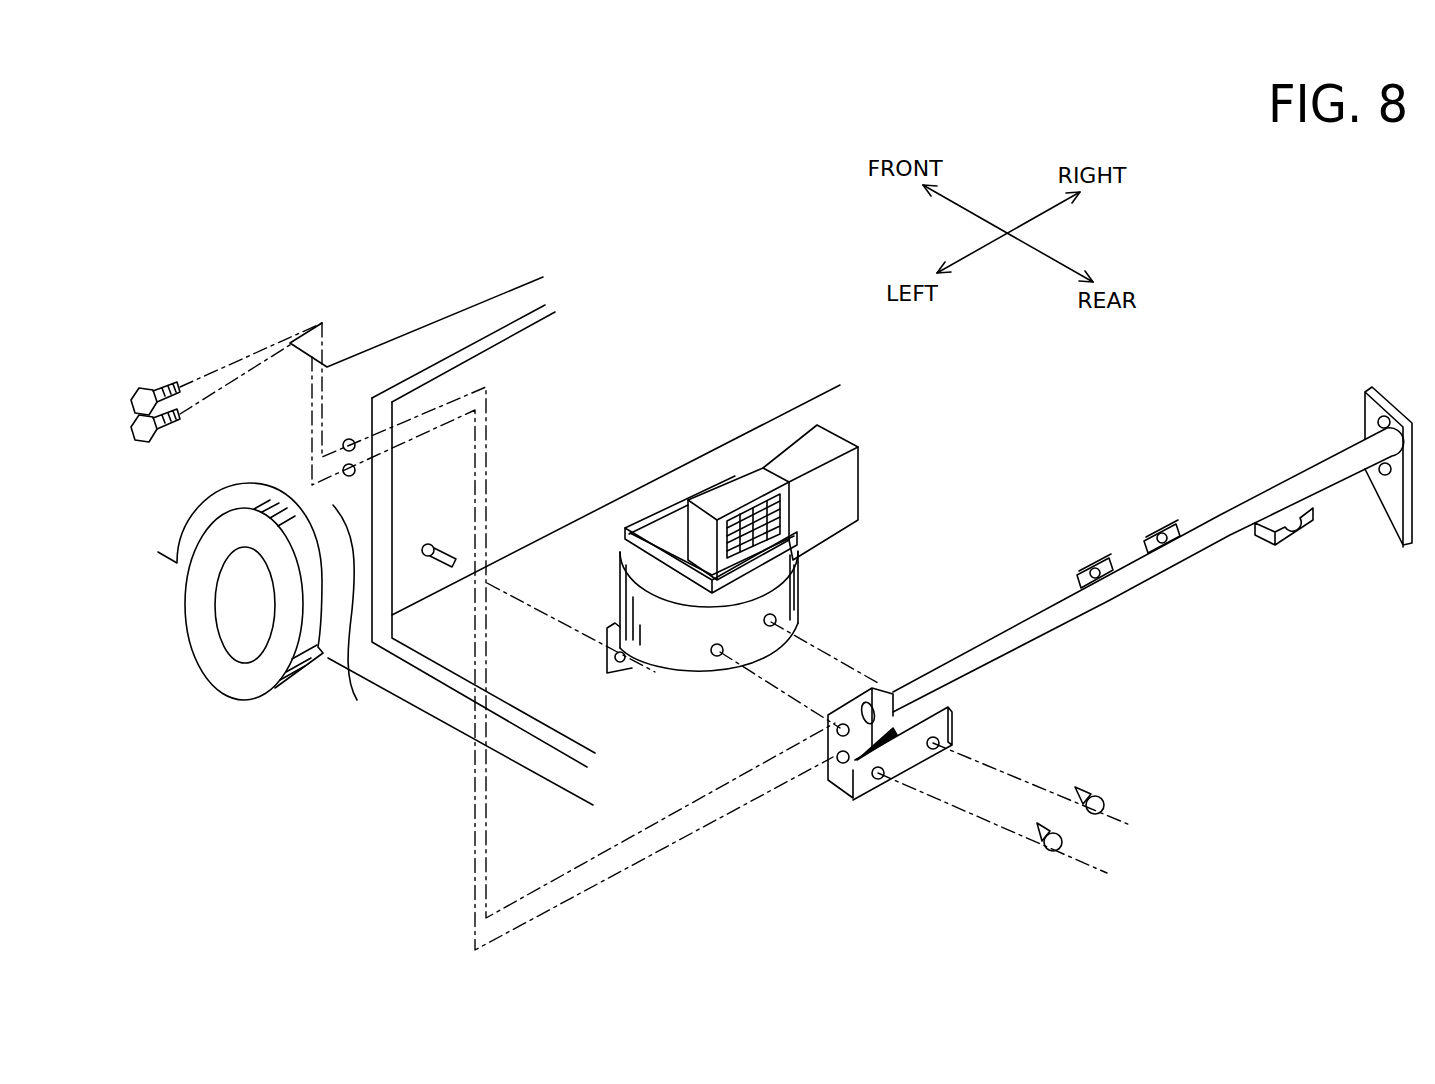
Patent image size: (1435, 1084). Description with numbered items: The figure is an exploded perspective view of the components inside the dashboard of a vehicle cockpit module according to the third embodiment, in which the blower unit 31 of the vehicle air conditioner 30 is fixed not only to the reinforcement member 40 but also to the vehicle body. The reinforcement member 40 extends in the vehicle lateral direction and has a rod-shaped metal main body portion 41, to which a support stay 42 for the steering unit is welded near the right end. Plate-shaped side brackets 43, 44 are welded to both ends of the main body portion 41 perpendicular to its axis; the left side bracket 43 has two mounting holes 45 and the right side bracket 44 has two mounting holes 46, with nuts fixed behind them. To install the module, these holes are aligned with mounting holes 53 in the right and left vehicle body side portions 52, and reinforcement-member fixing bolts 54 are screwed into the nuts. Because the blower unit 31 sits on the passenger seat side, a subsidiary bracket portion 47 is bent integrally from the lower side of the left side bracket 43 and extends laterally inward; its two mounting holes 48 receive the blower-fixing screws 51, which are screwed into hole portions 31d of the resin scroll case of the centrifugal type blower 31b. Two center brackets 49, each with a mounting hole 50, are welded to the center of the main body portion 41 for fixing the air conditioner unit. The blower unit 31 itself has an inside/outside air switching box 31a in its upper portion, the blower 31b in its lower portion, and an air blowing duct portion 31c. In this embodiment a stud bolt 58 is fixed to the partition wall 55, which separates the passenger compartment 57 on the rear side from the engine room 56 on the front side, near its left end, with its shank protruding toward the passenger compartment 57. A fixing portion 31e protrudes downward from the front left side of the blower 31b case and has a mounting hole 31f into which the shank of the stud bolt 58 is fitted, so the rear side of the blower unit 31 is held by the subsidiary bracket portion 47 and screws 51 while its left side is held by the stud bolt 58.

The vehicle air conditioner 30 is at (784, 429).
The blower unit 31 is at (688, 477).
The inside/outside air switching box 31a is at (665, 512).
The centrifugal type blower 31b is at (630, 608).
The air blowing duct portion 31c is at (838, 435).
The hole portions 31d is at (776, 616).
The fixing portion 31e is at (632, 665).
The mounting hole 31f is at (607, 656).
The reinforcement member 40 is at (1128, 590).
The main body portion 41 is at (1050, 632).
The support stay 42 is at (1280, 547).
The side bracket 43 is at (878, 685).
The side bracket 44 is at (1390, 395).
The mounting holes 45 is at (837, 728).
The mounting holes 46 is at (1377, 421).
The subsidiary bracket portion 47 is at (950, 713).
The mounting holes 48 is at (985, 742).
The center brackets 49 is at (1078, 580).
The mounting hole 50 is at (1103, 563).
The blower-fixing screws 51 is at (1108, 797).
The vehicle body side portions 52 is at (357, 700).
The mounting holes 53 is at (349, 438).
The reinforcement-member fixing bolts 54 is at (140, 390).
The partition wall 55 is at (523, 281).
The engine room 56 is at (475, 270).
The passenger compartment 57 is at (975, 428).
The stud bolt 58 is at (428, 558).